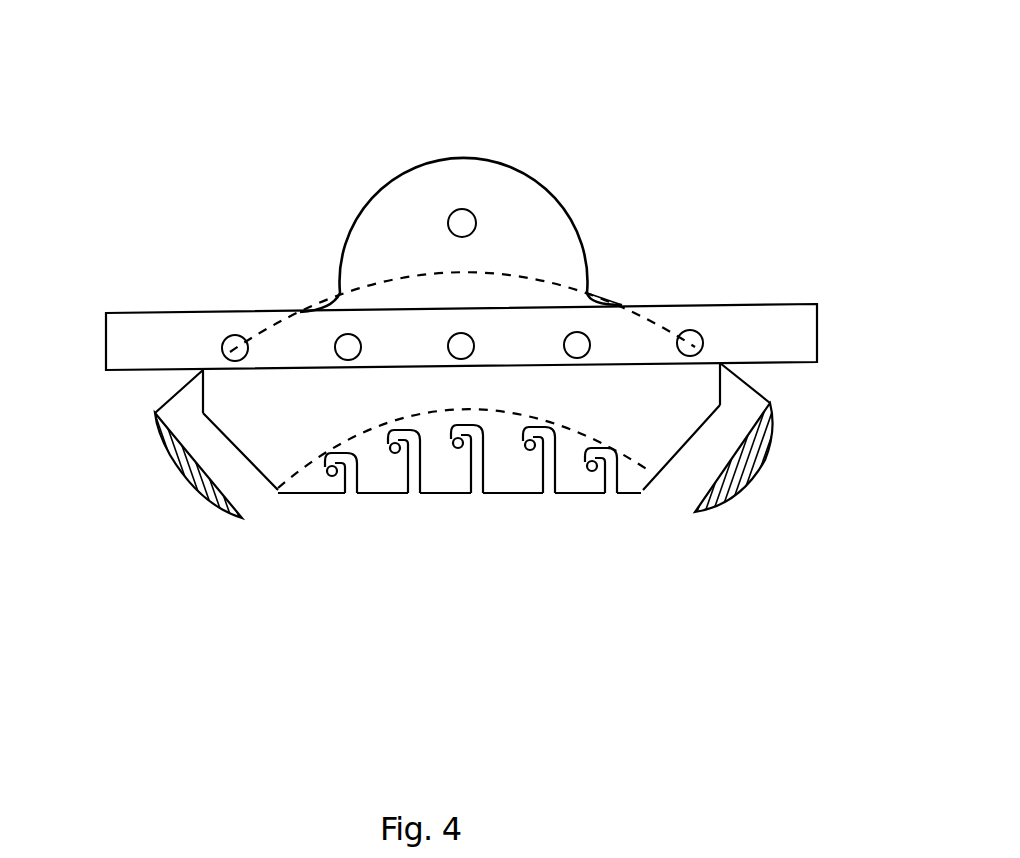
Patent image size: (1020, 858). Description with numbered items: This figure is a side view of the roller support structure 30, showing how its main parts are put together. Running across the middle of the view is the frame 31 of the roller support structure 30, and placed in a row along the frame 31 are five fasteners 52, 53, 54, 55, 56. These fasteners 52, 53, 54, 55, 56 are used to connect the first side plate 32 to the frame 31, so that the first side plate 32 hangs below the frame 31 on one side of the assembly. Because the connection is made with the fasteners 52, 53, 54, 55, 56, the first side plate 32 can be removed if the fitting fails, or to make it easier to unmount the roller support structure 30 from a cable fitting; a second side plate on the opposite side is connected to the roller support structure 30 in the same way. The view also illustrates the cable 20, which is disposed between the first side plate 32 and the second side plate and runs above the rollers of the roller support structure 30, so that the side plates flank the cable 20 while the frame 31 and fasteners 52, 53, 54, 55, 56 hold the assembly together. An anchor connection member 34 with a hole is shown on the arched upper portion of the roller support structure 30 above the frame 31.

The cable 20 is at (697, 445).
The roller support structure 30 is at (633, 177).
The frame 31 is at (148, 332).
The first side plate 32 is at (250, 408).
The anchor connection member 34 is at (454, 222).
The fastener 52 is at (642, 239).
The fastener 53 is at (642, 239).
The fastener 54 is at (642, 239).
The fastener 55 is at (642, 239).
The fastener 56 is at (642, 239).